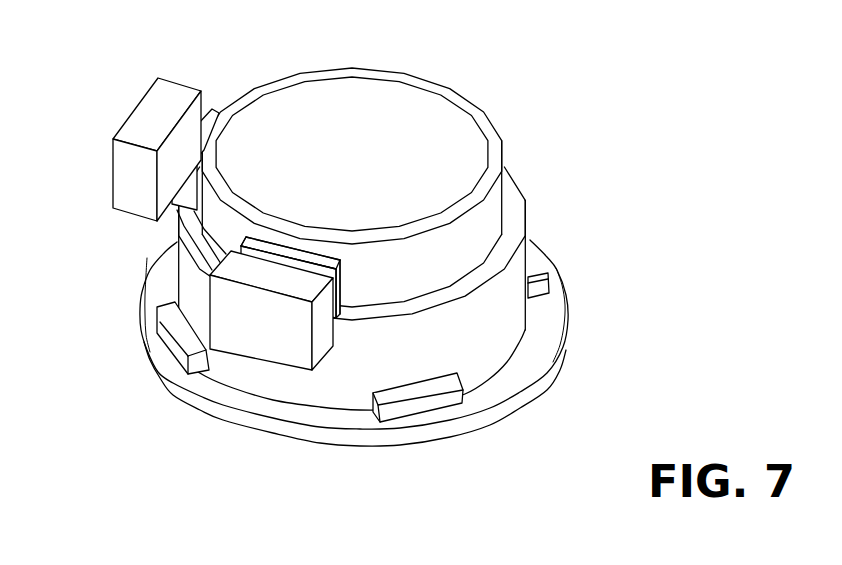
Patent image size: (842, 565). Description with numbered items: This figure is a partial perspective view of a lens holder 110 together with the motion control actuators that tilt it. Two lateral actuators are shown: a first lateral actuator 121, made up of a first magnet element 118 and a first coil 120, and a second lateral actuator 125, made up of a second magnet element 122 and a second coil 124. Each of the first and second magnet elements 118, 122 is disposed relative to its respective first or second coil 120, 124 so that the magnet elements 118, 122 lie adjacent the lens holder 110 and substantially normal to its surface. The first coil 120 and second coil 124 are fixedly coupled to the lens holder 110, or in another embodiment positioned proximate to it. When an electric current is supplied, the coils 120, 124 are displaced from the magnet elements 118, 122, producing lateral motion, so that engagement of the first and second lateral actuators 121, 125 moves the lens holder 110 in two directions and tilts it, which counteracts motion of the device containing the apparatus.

The lens holder 110 is at (458, 97).
The first magnet element 118 is at (248, 317).
The first coil 120 is at (248, 240).
The first lateral actuator 121 is at (344, 295).
The second magnet element 122 is at (160, 115).
The second coil 124 is at (205, 116).
The second lateral actuator 125 is at (152, 184).